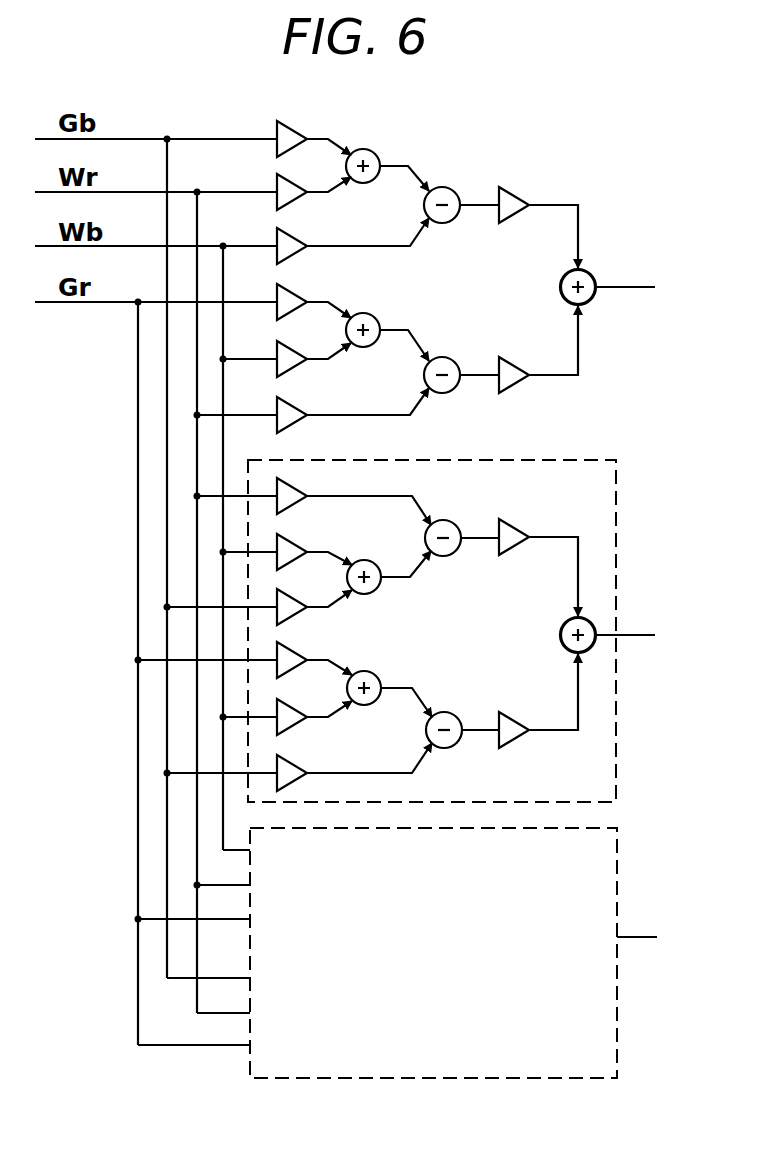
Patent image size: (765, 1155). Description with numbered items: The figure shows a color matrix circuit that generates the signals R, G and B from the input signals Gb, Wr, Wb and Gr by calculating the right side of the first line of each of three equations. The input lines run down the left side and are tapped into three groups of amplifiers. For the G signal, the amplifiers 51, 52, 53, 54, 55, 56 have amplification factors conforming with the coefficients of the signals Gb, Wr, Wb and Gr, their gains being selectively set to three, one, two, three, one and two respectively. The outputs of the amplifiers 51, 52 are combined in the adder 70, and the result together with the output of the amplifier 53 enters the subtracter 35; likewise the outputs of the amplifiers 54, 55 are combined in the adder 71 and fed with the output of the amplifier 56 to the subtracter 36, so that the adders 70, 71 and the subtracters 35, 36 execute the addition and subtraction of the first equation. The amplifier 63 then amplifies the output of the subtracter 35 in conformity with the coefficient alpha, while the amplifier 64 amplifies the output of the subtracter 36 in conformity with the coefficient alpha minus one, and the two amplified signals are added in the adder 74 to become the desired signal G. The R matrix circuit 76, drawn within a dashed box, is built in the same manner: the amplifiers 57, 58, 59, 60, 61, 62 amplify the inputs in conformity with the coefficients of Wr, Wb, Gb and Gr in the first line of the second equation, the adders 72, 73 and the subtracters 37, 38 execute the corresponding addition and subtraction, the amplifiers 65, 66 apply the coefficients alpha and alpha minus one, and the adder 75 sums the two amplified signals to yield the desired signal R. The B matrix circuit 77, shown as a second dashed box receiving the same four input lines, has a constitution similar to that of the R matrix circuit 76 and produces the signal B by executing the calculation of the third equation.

The subtracter 35 is at (455, 192).
The subtracter 36 is at (455, 363).
The subtracter 37 is at (456, 523).
The subtracter 38 is at (457, 714).
The amplifier 51 is at (291, 126).
The amplifier 52 is at (290, 184).
The amplifier 53 is at (290, 238).
The amplifier 54 is at (291, 293).
The amplifier 55 is at (290, 350).
The amplifier 56 is at (291, 405).
The amplifier 57 is at (292, 488).
The amplifier 58 is at (292, 543).
The amplifier 59 is at (292, 598).
The amplifier 60 is at (292, 652).
The amplifier 61 is at (292, 709).
The amplifier 62 is at (292, 765).
The amplifier 63 is at (513, 196).
The amplifier 64 is at (513, 367).
The amplifier 65 is at (514, 528).
The amplifier 66 is at (514, 719).
The adder 70 is at (372, 152).
The adder 71 is at (372, 316).
The adder 72 is at (371, 560).
The adder 73 is at (372, 671).
The adder 74 is at (560, 287).
The adder 75 is at (560, 635).
The R matrix circuit 76 is at (618, 778).
The B matrix circuit 77 is at (618, 1026).